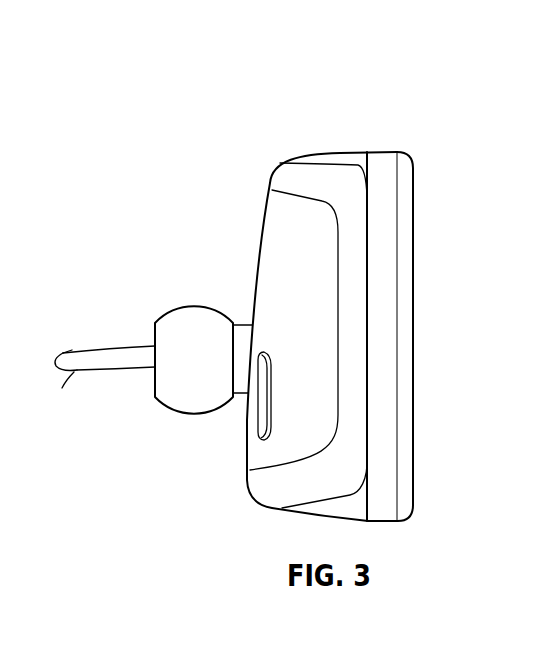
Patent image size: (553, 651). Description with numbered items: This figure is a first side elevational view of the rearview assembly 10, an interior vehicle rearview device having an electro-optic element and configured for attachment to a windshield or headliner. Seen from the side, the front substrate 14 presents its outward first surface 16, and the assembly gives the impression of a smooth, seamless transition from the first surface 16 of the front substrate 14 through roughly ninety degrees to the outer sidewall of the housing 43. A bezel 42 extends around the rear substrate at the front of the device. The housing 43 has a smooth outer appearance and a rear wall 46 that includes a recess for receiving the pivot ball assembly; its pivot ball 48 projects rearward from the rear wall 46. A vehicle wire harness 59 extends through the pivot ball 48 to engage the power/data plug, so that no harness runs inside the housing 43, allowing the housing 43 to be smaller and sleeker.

The rearview assembly 10 is at (422, 86).
The front substrate 14 is at (413, 350).
The first surface 16 is at (413, 223).
The bezel 42 is at (380, 165).
The housing 43 is at (313, 181).
The rear wall 46 is at (278, 258).
The pivot ball 48 is at (188, 393).
The vehicle wire harness 59 is at (125, 343).